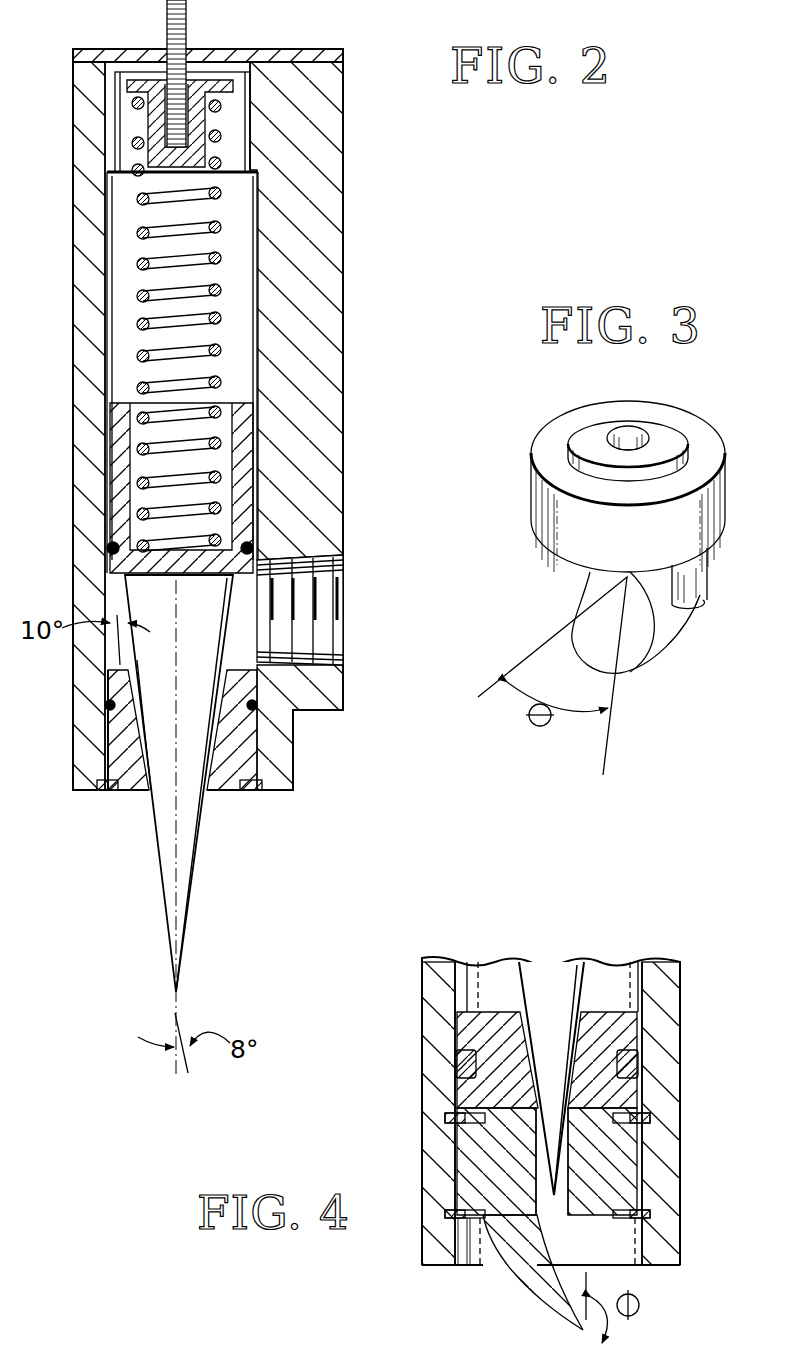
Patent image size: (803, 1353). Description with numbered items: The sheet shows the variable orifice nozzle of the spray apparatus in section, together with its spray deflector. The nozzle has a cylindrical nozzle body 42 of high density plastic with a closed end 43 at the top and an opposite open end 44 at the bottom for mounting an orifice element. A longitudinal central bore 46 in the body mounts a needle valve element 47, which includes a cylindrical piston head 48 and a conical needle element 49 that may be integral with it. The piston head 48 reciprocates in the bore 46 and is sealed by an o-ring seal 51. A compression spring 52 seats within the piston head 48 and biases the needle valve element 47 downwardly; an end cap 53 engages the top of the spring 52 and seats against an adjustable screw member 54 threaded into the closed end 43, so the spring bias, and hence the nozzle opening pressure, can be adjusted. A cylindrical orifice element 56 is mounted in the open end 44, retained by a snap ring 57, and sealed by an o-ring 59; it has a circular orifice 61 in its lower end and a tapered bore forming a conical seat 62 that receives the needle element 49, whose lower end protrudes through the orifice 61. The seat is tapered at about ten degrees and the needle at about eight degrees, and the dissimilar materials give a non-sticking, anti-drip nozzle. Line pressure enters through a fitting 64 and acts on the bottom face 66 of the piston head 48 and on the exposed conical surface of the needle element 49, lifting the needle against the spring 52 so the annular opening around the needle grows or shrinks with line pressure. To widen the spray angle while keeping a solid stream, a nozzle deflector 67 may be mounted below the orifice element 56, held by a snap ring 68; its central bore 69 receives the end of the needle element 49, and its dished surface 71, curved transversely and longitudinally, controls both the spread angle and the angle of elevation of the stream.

In FIG. 2, the cylindrical nozzle body 42 is at (338, 203).
In FIG. 4, the cylindrical nozzle body 42 is at (682, 1152).
In FIG. 2, the closed end 43 is at (95, 47).
In FIG. 2, the open end 44 is at (285, 795).
In FIG. 2, the longitudinal central bore 46 is at (115, 349).
In FIG. 2, the needle valve element 47 is at (146, 855).
In FIG. 2, the cylindrical piston head 48 is at (252, 498).
In FIG. 2, the conical needle element 49 is at (180, 893).
In FIG. 4, the conical needle element 49 is at (540, 985).
In FIG. 2, the o-ring seal 51 is at (110, 548).
In FIG. 2, the compression spring 52 is at (135, 200).
In FIG. 2, the end cap 53 is at (145, 121).
In FIG. 2, the adjustable screw member 54 is at (188, 24).
In FIG. 2, the cylindrical orifice element 56 is at (248, 737).
In FIG. 4, the cylindrical orifice element 56 is at (462, 1088).
In FIG. 2, the snap ring 57 is at (258, 782).
In FIG. 4, the snap ring 57 is at (450, 1118).
In FIG. 2, the o-ring 59 is at (110, 706).
In FIG. 4, the o-ring 59 is at (640, 1060).
In FIG. 2, the orifice 61 is at (148, 793).
In FIG. 2, the conical seat 62 is at (135, 716).
In FIG. 2, the fitting 64 is at (322, 656).
In FIG. 2, the bottom face 66 is at (232, 590).
In FIG. 3, the nozzle deflector 67 is at (643, 536).
In FIG. 4, the snap ring 68 is at (475, 1238).
In FIG. 3, the central bore 69 is at (613, 433).
In FIG. 4, the central bore 69 is at (573, 1195).
In FIG. 3, the dished surface 71 is at (603, 612).